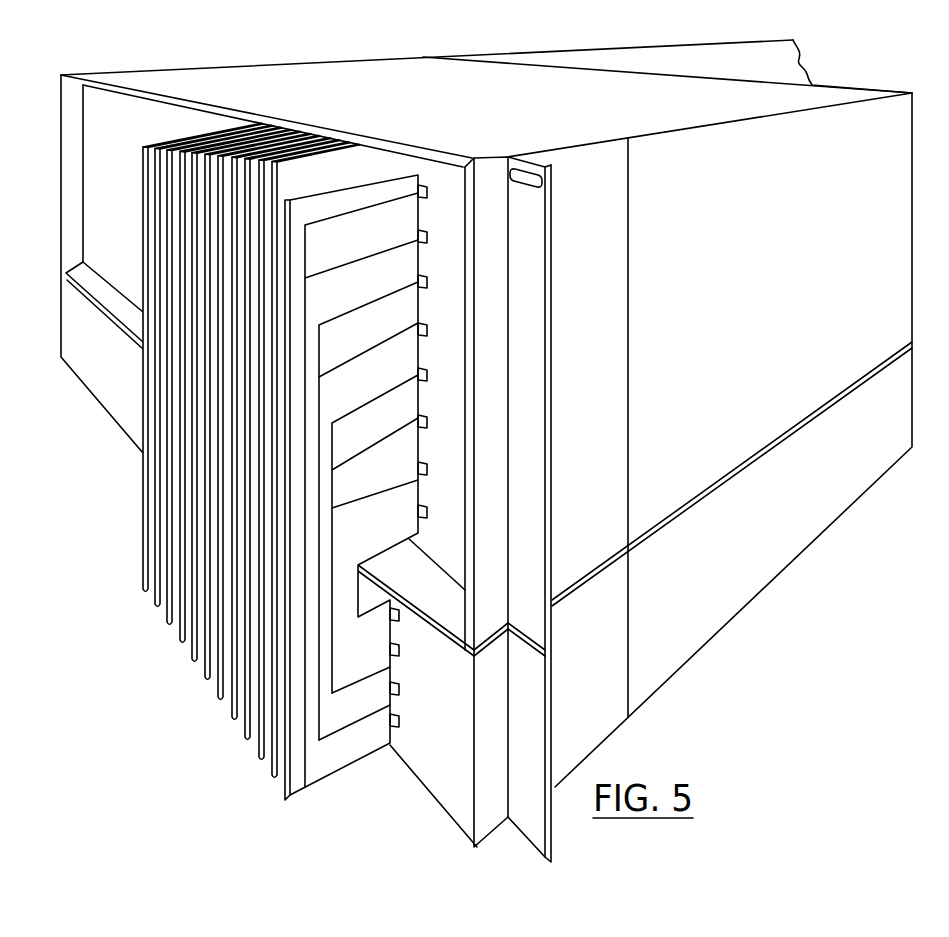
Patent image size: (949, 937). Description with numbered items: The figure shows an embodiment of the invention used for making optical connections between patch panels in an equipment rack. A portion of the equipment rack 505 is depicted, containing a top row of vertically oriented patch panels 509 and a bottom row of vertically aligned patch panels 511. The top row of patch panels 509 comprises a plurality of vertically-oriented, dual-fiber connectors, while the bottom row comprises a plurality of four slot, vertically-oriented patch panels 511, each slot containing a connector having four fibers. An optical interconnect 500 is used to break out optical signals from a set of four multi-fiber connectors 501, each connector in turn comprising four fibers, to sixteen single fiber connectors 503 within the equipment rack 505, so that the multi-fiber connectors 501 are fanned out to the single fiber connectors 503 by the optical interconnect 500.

The optical interconnect 500 is at (146, 592).
The multi-fiber connector 501 is at (400, 614).
The single fiber connector 503 is at (428, 194).
The equipment rack 505 is at (662, 44).
The patch panel 509 is at (430, 150).
The patch panel 511 is at (400, 749).